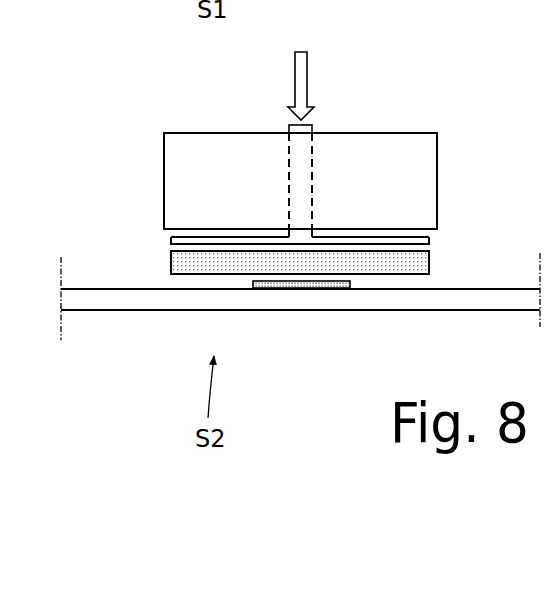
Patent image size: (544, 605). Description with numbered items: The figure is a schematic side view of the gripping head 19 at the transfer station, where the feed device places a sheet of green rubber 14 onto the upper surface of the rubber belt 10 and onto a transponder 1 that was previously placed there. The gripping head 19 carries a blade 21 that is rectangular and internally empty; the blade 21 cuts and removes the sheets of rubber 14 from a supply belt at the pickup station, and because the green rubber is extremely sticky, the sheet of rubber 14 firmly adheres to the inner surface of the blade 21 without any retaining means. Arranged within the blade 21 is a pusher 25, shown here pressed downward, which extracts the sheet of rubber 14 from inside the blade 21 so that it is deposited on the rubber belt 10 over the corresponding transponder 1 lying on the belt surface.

The transponder 1 is at (297, 286).
The rubber belt 10 is at (98, 296).
The sheet of rubber 14 is at (400, 265).
The gripping head 19 is at (400, 100).
The blade 21 is at (438, 152).
The pusher 25 is at (172, 240).